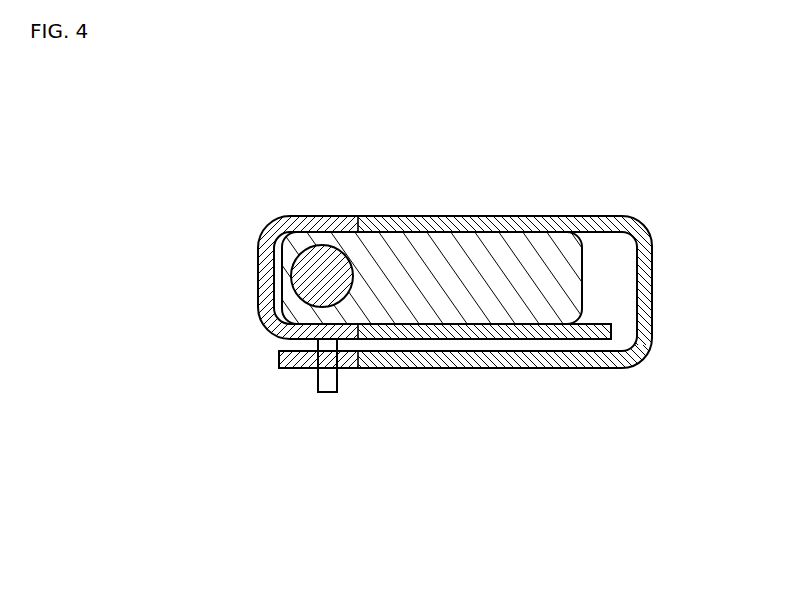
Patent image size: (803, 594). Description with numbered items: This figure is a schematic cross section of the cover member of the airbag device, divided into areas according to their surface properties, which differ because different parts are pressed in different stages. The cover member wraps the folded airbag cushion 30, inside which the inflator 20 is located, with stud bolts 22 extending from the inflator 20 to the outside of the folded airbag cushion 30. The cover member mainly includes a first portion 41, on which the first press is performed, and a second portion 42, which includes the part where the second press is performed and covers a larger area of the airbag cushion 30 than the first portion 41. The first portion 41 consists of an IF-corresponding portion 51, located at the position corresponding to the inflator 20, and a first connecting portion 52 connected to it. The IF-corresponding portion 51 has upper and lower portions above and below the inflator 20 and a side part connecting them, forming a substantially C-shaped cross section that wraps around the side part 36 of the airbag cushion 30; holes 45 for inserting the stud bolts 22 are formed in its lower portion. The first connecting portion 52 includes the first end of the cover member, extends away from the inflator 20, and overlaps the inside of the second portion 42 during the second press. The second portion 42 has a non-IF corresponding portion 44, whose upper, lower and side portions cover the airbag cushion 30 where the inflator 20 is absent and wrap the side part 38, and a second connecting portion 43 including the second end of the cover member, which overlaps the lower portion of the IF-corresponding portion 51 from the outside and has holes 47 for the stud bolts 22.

The inflator 20 is at (300, 297).
The stud bolts 22 is at (325, 393).
The airbag cushion 30 is at (513, 275).
The side part 36 is at (283, 268).
The side part 38 is at (583, 275).
The first portion 41 is at (308, 141).
The second portion 42 is at (458, 536).
The second connecting portion 43 is at (292, 367).
The non-IF corresponding portion 44 is at (435, 367).
The holes 45 is at (282, 342).
The holes 47 is at (347, 367).
The IF-corresponding portion 51 is at (303, 222).
The first connecting portion 52 is at (420, 328).